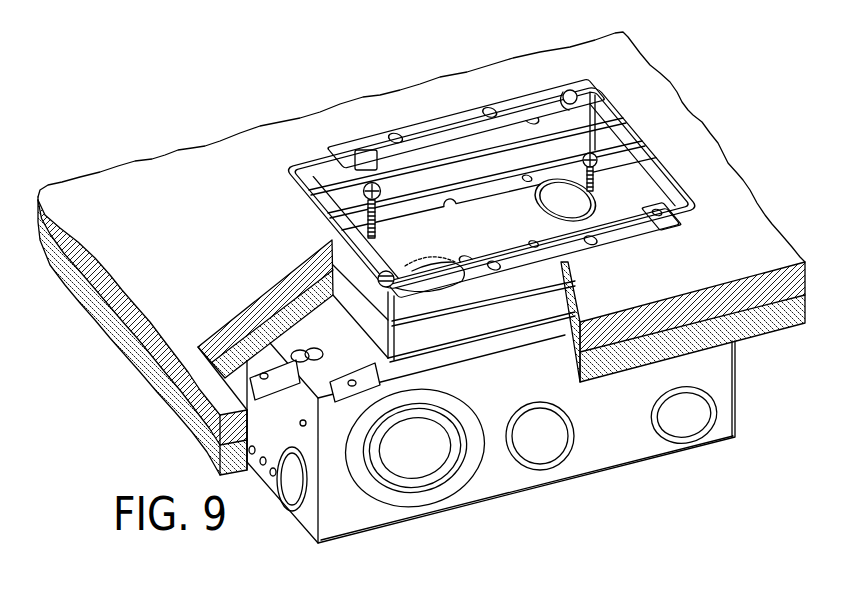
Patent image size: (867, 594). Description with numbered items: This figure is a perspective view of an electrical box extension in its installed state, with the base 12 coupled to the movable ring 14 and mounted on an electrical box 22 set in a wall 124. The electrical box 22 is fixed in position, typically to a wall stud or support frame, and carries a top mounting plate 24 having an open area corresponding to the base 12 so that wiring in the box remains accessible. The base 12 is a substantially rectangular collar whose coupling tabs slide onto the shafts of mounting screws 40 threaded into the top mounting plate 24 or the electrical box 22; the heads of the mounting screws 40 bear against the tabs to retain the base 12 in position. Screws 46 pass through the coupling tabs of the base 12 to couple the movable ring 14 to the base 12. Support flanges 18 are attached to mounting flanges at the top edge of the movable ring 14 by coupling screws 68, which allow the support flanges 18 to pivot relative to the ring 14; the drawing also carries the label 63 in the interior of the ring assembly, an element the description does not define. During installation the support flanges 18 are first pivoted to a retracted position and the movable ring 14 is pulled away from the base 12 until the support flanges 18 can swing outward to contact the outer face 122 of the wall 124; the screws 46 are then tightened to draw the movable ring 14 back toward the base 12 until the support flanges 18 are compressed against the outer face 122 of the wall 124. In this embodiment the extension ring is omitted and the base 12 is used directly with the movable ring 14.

The base 12 is at (577, 300).
The movable ring 14 is at (350, 270).
The support flange 18 is at (462, 108).
The electrical box 22 is at (738, 411).
The top mounting plate 24 is at (472, 350).
The mounting screw 40 is at (588, 151).
The screw 46 is at (363, 193).
The opening 63 is at (462, 202).
The coupling screw 68 is at (570, 90).
The outer face 122 is at (747, 193).
The wall 124 is at (765, 340).